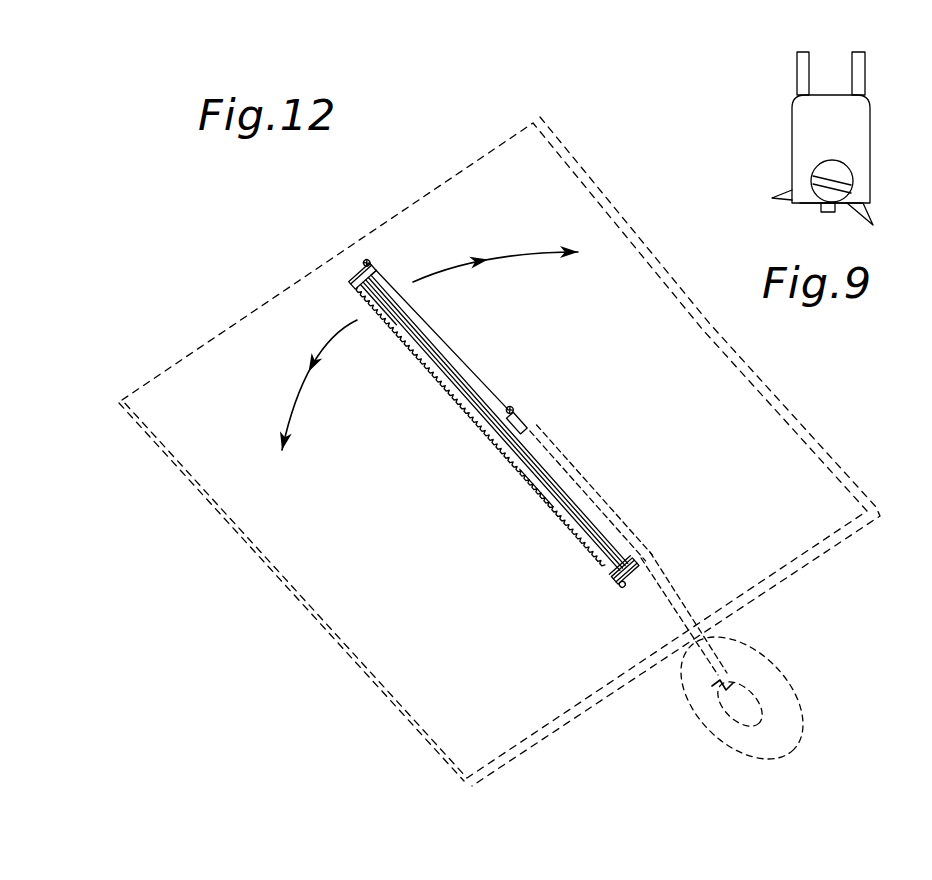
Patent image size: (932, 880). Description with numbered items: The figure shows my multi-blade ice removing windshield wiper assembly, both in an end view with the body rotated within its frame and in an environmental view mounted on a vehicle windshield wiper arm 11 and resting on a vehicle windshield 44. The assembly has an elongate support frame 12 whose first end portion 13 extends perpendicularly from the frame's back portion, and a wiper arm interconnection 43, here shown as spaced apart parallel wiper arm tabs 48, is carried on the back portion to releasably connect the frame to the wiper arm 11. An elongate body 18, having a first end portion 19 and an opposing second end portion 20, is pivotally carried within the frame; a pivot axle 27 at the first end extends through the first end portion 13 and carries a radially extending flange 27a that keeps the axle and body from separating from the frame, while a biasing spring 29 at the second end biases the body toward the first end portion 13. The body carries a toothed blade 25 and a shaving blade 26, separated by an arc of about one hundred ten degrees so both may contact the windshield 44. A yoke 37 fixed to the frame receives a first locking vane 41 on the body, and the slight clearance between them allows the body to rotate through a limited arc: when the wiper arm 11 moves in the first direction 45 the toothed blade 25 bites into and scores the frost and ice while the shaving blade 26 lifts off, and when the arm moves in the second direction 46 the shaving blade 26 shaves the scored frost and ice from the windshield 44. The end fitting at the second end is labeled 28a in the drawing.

In FIG. 12, the vehicle windshield wiper arm 11 is at (673, 587).
In FIG. 12, the support frame 12 is at (473, 367).
In FIG. 9, the support frame 12 is at (790, 132).
In FIG. 12, the first end portion 13 is at (358, 252).
In FIG. 9, the first end portion 13 is at (850, 140).
In FIG. 12, the elongate body 18 is at (535, 485).
In FIG. 12, the first end portion of body 19 is at (385, 318).
In FIG. 12, the second end portion of body 20 is at (615, 553).
In FIG. 12, the toothed blade 25 is at (483, 420).
In FIG. 9, the toothed blade 25 is at (874, 214).
In FIG. 9, the shaving blade 26 is at (786, 195).
In FIG. 12, the pivot axle 27 is at (352, 280).
In FIG. 12, the radially extending flange 27a is at (353, 268).
In FIG. 9, the radially extending flange 27a is at (822, 188).
In FIG. 12, the pivot pin 28a is at (636, 578).
In FIG. 12, the biasing spring 29 is at (620, 576).
In FIG. 12, the yoke 37 is at (366, 270).
In FIG. 9, the first locking vane 41 is at (826, 212).
In FIG. 12, the wiper arm interconnection 43 is at (514, 409).
In FIG. 12, the vehicle windshield 44 is at (479, 195).
In FIG. 12, the first direction 45 is at (300, 400).
In FIG. 12, the second direction 46 is at (516, 253).
In FIG. 12, the wiper arm tabs 48 is at (510, 406).
In FIG. 9, the wiper arm tabs 48 is at (800, 62).